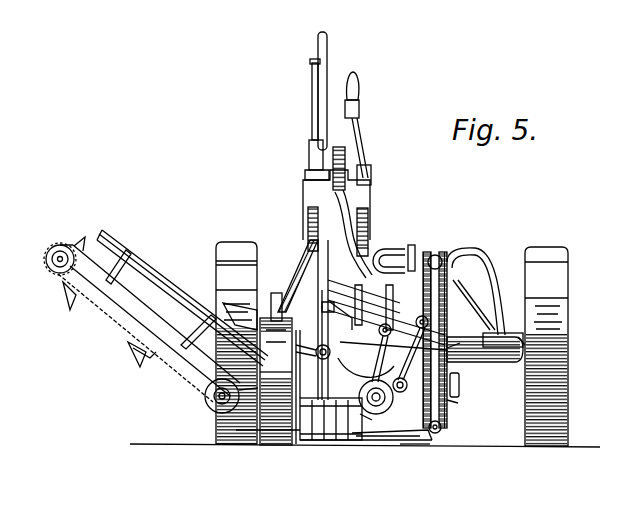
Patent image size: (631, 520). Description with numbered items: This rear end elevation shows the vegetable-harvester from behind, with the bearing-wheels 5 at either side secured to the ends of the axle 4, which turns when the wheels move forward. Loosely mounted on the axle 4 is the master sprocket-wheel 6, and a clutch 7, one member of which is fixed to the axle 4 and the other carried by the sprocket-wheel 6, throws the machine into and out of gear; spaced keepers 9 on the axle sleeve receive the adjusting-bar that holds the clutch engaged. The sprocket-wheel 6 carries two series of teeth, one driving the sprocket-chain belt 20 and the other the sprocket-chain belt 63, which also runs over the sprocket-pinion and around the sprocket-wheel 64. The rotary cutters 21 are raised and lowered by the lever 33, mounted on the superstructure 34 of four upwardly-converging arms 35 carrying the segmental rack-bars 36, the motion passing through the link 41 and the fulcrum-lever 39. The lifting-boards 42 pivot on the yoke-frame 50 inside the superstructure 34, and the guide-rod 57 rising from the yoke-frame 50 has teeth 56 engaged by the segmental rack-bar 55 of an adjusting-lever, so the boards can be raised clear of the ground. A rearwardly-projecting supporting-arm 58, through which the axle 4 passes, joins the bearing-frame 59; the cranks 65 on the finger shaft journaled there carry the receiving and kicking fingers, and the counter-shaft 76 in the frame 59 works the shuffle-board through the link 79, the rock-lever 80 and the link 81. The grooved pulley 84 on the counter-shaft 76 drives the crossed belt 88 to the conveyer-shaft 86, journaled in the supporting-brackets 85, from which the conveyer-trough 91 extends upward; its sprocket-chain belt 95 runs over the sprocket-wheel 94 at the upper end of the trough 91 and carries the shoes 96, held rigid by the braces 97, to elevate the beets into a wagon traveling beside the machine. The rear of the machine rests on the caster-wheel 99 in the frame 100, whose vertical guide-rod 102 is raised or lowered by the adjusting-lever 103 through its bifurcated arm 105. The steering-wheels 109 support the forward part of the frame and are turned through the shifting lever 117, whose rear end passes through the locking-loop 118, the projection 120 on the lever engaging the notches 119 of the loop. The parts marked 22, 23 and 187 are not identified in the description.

The axle 4 is at (522, 337).
The bearing-wheels 5 is at (239, 248).
The master sprocket-wheel 6 is at (438, 256).
The clutch 7 is at (458, 341).
The keepers 9 is at (453, 340).
The sprocket-chain belt 20 is at (430, 256).
The cutters 21 is at (378, 444).
The skid plate 22 is at (396, 446).
The link 23 is at (370, 420).
The lever 33 is at (371, 170).
The superstructure 34 is at (317, 270).
The arms 35 is at (308, 246).
The segmental rack-bars 36 is at (308, 222).
The fulcrum-lever 39 is at (341, 316).
The link 41 is at (386, 311).
The lifting-boards 42 is at (313, 462).
The yoke-frame 50 is at (322, 304).
The segmental rack-bar 55 is at (303, 205).
The teeth 56 is at (346, 157).
The guide-rod 57 is at (340, 136).
The supporting-arm 58 is at (459, 382).
The bearing-frame 59 is at (421, 330).
The sprocket-chain belt 63 is at (441, 429).
The sprocket-wheel 64 is at (449, 403).
The cranks 65 is at (352, 402).
The counter-shaft 76 is at (366, 429).
The link 79 is at (390, 403).
The rock-lever 80 is at (405, 390).
The link 81 is at (216, 403).
The grooved pulley 84 is at (366, 369).
The supporting-brackets 85 is at (252, 442).
The conveyer-shaft 86 is at (205, 398).
The crossed belt 88 is at (300, 440).
The conveyer-trough 91 is at (167, 325).
The sprocket-wheel 94 is at (62, 278).
The sprocket-chain belt 95 is at (109, 323).
The shoes 96 is at (143, 358).
The braces 97 is at (132, 350).
The caster-wheel 99 is at (276, 381).
The frame 100 is at (227, 320).
The guide-rod 102 is at (274, 300).
The adjusting-lever 103 is at (305, 236).
The bifurcated arm 105 is at (276, 365).
The steering-wheels 109 is at (331, 352).
The shifting lever 117 is at (412, 245).
The locking-loop 118 is at (472, 263).
The notches 119 is at (392, 261).
The projection 120 is at (394, 253).
The roller 187 is at (386, 338).